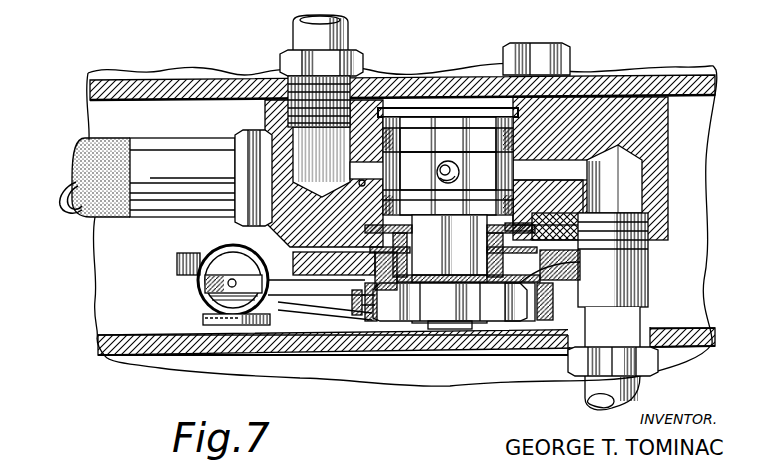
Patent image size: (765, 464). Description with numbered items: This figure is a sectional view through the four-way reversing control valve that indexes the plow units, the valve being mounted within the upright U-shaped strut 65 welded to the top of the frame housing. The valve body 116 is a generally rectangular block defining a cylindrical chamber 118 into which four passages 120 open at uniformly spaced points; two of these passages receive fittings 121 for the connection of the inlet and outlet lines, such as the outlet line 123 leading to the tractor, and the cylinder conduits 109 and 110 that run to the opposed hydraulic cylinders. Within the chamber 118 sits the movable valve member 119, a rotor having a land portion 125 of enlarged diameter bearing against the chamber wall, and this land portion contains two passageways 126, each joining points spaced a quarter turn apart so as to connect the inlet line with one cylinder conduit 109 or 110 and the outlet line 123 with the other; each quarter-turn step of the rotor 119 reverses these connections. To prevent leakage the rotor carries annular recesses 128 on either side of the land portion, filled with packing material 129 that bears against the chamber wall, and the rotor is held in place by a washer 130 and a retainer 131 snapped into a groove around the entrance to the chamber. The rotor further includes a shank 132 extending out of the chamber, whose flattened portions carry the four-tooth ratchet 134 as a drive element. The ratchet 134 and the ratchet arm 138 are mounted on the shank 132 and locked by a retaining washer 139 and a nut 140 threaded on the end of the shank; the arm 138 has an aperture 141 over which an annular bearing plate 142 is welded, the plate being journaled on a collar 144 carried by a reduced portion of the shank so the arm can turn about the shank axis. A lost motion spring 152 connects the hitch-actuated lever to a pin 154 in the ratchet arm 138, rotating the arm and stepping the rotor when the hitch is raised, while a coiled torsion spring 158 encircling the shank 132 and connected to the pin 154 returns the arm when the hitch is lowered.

The upright U-shaped strut 65 is at (140, 90).
The cylinder conduit 109 is at (298, 34).
The cylinder conduit 110 is at (638, 394).
The valve body 116 is at (627, 103).
The cylindrical chamber 118 is at (392, 156).
The movable valve member 119 is at (412, 112).
The passage 120 is at (596, 173).
The fitting 121 is at (352, 55).
The outlet line 123 is at (86, 156).
The land portion 125 is at (575, 170).
The passageway 126 is at (446, 180).
The annular recess 128 is at (453, 130).
The packing material 129 is at (404, 138).
The washer 130 is at (548, 202).
The retainer 131 is at (544, 225).
The rotor shank 132 is at (470, 322).
The four-tooth ratchet 134 is at (558, 272).
The ratchet arm 138 is at (316, 262).
The retaining washer 139 is at (378, 322).
The nut 140 is at (492, 322).
The aperture 141 is at (512, 322).
The annular bearing plate 142 is at (352, 298).
The collar 144 is at (425, 330).
The lost motion spring 152 is at (205, 281).
The pin 154 is at (203, 319).
The coiled torsion spring 158 is at (317, 312).